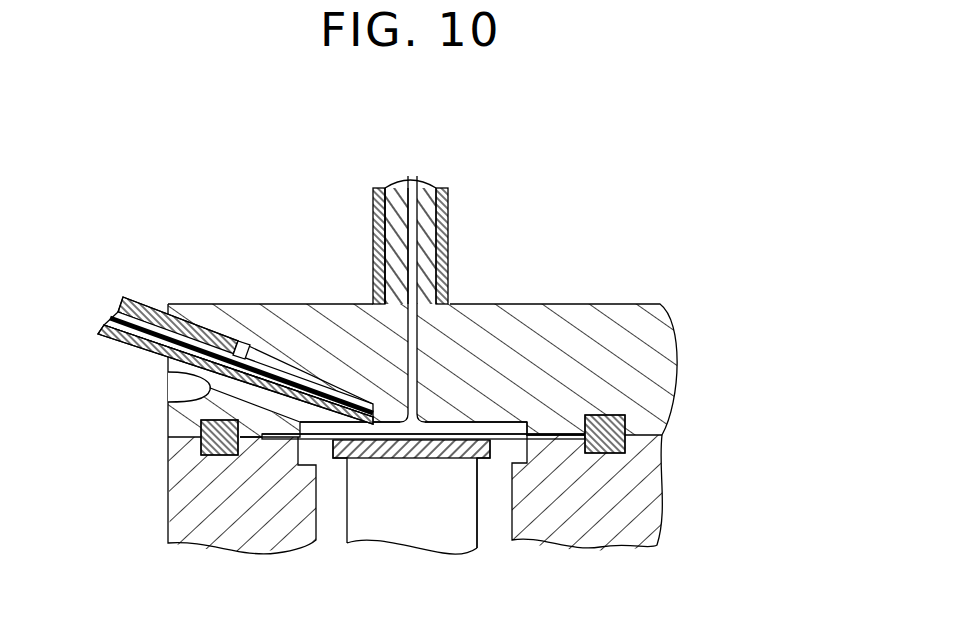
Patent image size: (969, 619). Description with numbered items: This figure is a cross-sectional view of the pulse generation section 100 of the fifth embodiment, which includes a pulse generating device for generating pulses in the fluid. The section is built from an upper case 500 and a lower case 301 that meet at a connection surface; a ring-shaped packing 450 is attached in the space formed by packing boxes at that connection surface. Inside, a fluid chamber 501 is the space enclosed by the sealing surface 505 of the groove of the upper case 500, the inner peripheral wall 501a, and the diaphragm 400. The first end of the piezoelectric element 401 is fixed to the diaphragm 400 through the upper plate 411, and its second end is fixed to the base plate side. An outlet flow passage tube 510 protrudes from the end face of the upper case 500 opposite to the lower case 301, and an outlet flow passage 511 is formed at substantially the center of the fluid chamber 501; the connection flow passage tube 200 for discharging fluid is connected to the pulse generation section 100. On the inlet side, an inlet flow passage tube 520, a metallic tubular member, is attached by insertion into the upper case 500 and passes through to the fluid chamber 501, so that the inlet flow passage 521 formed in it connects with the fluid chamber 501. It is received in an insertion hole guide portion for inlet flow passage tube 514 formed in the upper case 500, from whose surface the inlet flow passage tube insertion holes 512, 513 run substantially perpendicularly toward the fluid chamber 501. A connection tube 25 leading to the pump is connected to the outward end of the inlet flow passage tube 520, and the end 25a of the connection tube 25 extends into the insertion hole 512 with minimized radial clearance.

The pulse generation section 100 is at (708, 103).
The connection flow passage tube 200 is at (450, 212).
The outlet flow passage tube 510 is at (378, 212).
The outlet flow passage 511 is at (396, 216).
The inlet flow passage tube insertion hole 512 is at (239, 378).
The inlet flow passage tube insertion hole 513 is at (323, 394).
The insertion hole guide portion for inlet flow passage tube 514 is at (195, 322).
The inlet flow passage tube 520 is at (232, 342).
The inlet flow passage 521 is at (262, 350).
The connection tube 25 is at (108, 336).
The end of connection tube 25a is at (176, 398).
The upper case 500 is at (605, 304).
The fluid chamber 501 is at (465, 421).
The inner peripheral wall 501a is at (531, 434).
The sealing surface 505 is at (500, 425).
The ring-shaped packing 450 is at (636, 423).
The lower case 301 is at (628, 508).
The diaphragm 400 is at (334, 458).
The upper plate 411 is at (408, 458).
The piezoelectric element 401 is at (480, 512).